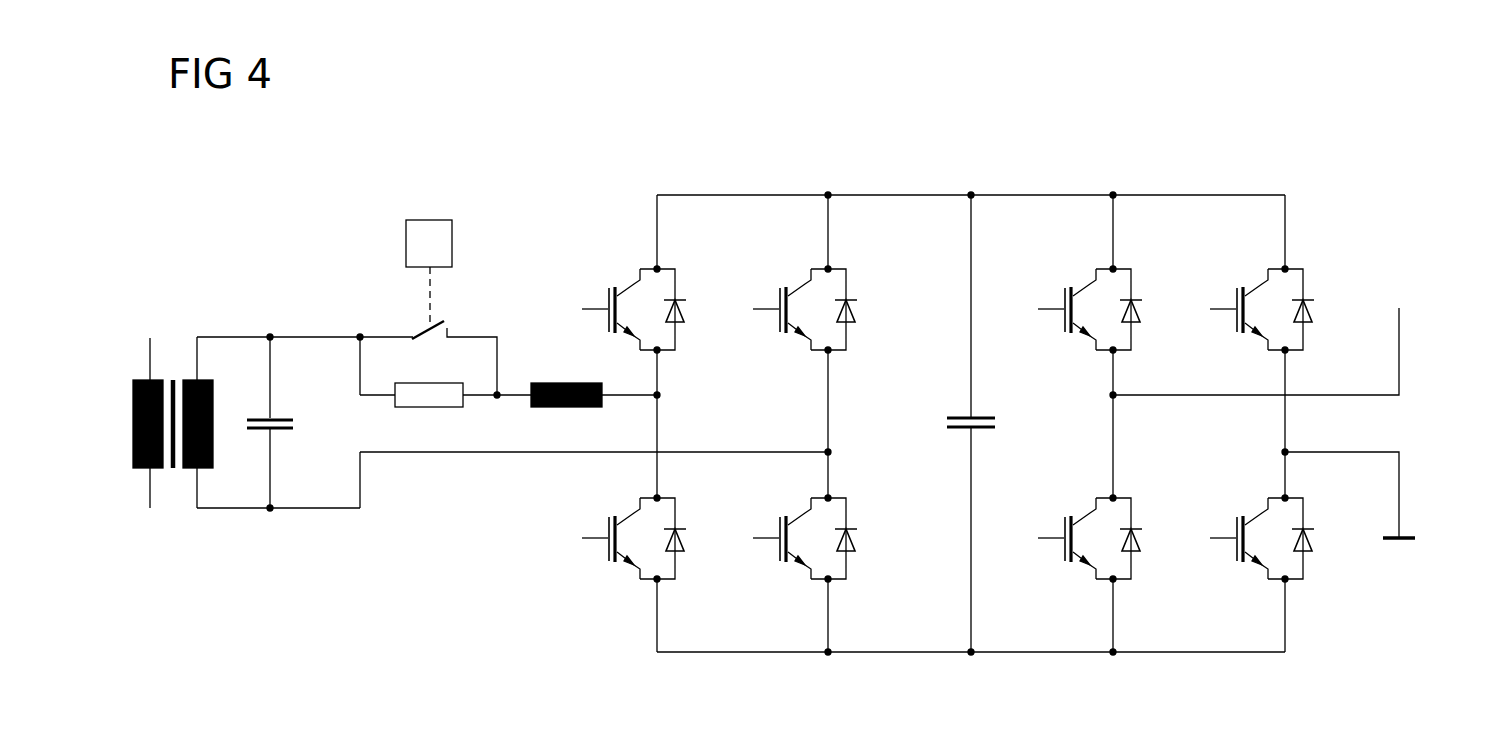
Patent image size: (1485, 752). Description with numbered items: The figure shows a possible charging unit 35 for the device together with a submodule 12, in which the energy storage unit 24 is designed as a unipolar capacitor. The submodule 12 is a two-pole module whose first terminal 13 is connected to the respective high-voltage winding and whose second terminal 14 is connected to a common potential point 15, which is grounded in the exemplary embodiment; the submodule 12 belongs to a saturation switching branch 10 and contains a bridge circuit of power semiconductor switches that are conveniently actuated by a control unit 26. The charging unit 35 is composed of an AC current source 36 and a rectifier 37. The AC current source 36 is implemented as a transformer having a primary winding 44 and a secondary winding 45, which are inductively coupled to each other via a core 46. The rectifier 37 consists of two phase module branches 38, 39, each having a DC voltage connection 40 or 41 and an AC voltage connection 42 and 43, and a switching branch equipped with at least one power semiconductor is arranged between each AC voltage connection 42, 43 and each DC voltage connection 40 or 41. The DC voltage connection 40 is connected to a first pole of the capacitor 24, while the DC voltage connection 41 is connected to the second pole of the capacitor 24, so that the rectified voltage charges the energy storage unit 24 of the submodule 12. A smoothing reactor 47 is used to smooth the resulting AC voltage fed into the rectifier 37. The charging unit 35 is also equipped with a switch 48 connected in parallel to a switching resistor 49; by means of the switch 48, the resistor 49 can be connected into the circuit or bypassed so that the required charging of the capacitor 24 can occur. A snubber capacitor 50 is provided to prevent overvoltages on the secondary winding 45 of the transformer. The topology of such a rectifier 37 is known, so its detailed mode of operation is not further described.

The saturation switching branch 10 is at (1312, 205).
The submodule 12 is at (1140, 205).
The first terminal 13 is at (1400, 357).
The second terminal 14 is at (1400, 500).
The potential point 15 is at (1405, 541).
The energy storage unit 24 is at (998, 423).
The control unit 26 is at (430, 218).
The charging unit 35 is at (481, 255).
The AC current source 36 is at (173, 408).
The rectifier 37 is at (933, 397).
The phase module branch 38 is at (612, 205).
The phase module branch 39 is at (782, 208).
The DC voltage connection 40 is at (657, 193).
The DC voltage connection 41 is at (657, 655).
The AC voltage connection 42 is at (660, 394).
The AC voltage connection 43 is at (831, 451).
The primary winding 44 is at (133, 455).
The secondary winding 45 is at (213, 455).
The core 46 is at (171, 470).
The smoothing reactor 47 is at (560, 382).
The switch 48 is at (411, 333).
The switching resistor 49 is at (423, 408).
The snubber capacitor 50 is at (293, 423).